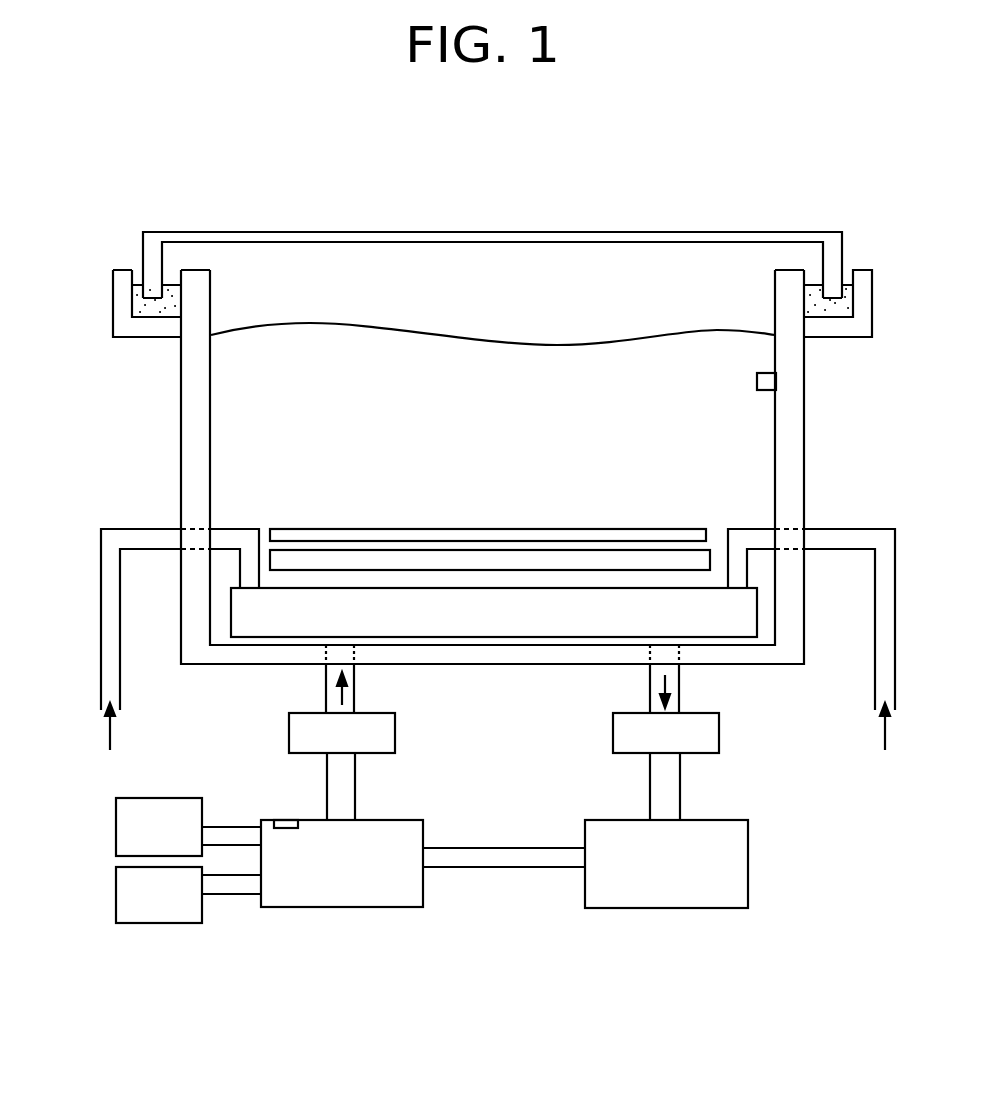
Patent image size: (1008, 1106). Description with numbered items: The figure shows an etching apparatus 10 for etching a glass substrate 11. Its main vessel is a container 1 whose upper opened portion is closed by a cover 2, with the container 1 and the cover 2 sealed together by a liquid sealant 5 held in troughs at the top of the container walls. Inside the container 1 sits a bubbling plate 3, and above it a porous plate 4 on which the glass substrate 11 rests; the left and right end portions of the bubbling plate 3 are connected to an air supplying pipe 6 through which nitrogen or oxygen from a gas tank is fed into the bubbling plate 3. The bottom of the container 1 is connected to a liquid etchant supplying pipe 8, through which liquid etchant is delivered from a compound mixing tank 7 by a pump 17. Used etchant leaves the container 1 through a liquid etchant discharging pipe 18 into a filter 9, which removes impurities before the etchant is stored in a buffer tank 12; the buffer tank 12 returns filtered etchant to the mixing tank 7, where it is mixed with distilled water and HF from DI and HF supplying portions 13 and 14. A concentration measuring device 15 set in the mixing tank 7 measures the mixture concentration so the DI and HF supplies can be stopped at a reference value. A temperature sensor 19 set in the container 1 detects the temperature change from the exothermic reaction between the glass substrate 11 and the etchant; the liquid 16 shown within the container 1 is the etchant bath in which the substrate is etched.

The container 1 is at (797, 405).
The cover 2 is at (832, 245).
The bubbling plate 3 is at (253, 620).
The porous plate 4 is at (677, 560).
The liquid sealant 5 is at (848, 310).
The air supplying pipe 6 is at (103, 598).
The compound mixing tank 7 is at (400, 832).
The liquid etchant supplying pipe 8 is at (352, 680).
The filter 9 is at (710, 733).
The etching apparatus 10 is at (106, 230).
The glass substrate 11 is at (283, 533).
The buffer tank 12 is at (738, 870).
The DI supplying portion 13 is at (120, 828).
The HF supplying portion 14 is at (120, 905).
The concentration measuring device 15 is at (287, 825).
The cleaning solution 16 is at (240, 397).
The pump 17 is at (388, 737).
The liquid etchant discharging pipe 18 is at (660, 682).
The temperature sensor 19 is at (768, 383).